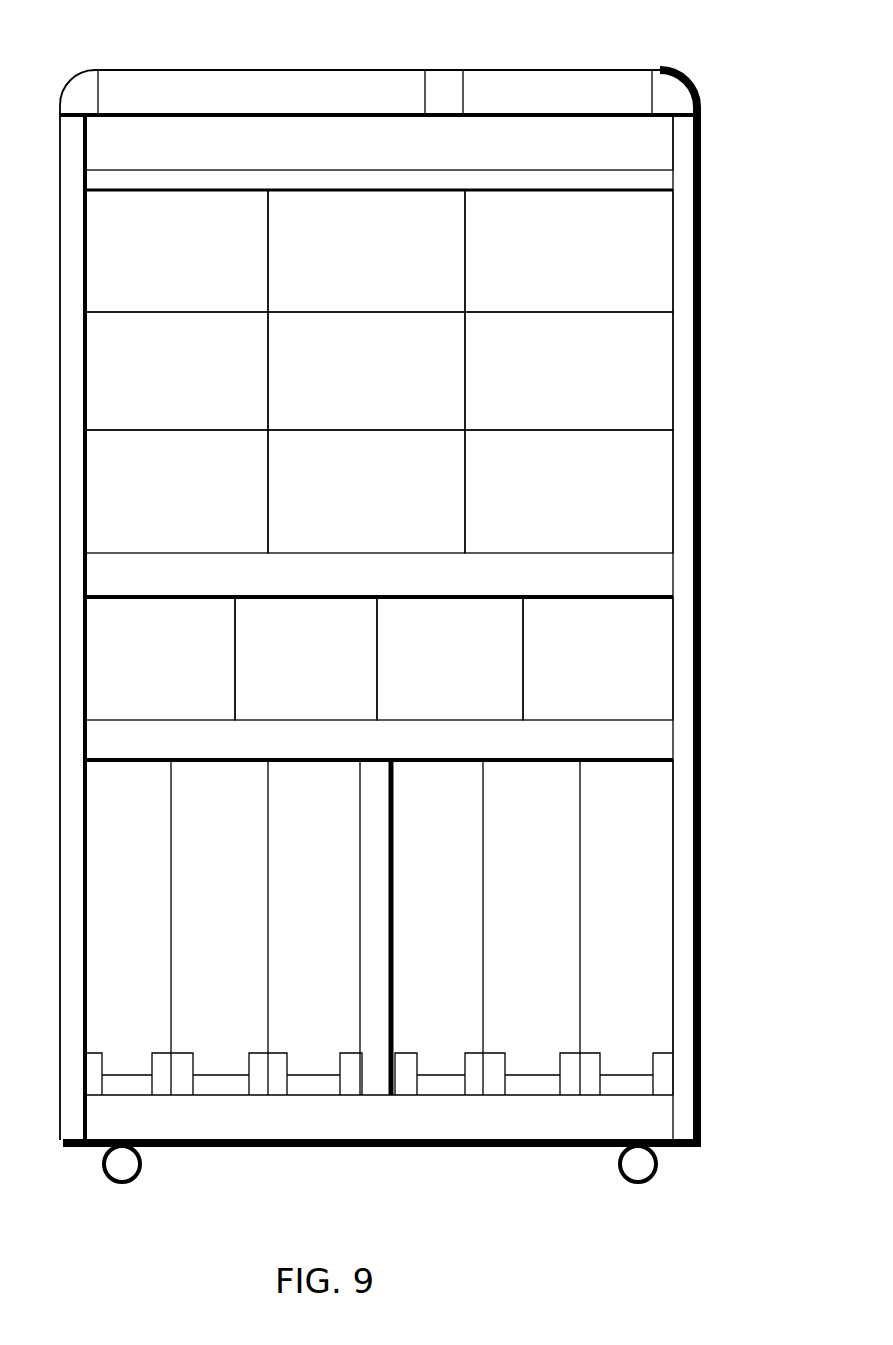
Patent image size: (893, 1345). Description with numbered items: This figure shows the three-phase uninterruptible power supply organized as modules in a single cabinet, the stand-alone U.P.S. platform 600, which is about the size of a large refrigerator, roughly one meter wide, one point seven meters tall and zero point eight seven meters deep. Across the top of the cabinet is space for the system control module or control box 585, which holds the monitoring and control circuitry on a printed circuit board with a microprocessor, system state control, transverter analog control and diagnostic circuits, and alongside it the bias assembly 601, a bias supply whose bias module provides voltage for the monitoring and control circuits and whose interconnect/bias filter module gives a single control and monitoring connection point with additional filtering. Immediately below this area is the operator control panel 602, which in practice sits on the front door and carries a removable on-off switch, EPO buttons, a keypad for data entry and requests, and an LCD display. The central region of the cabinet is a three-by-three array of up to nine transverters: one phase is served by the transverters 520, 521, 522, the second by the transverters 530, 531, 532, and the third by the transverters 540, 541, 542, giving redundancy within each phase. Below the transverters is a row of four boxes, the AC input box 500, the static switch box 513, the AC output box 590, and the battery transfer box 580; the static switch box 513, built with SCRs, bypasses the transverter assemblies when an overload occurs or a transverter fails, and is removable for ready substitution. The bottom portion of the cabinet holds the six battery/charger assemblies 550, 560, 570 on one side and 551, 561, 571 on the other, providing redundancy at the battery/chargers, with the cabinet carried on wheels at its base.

The U.P.S. platform 600 is at (462, 34).
The control box 585 is at (252, 108).
The bias assembly 601 is at (526, 108).
The operator control panel 602 is at (527, 157).
The transverter 522 is at (195, 263).
The transverter 532 is at (385, 263).
The transverter 542 is at (592, 263).
The transverter 521 is at (140, 390).
The transverter 531 is at (332, 390).
The transverter 541 is at (533, 390).
The transverter 520 is at (193, 495).
The transverter 530 is at (385, 495).
The transverter 540 is at (585, 495).
The AC input box 500 is at (128, 680).
The static switch box 513 is at (273, 680).
The AC output box 590 is at (477, 680).
The battery transfer box 580 is at (572, 680).
The battery/charger assembly 550 is at (90, 863).
The battery/charger assembly 560 is at (188, 863).
The battery/charger assembly 570 is at (282, 863).
The battery/charger assembly 551 is at (407, 863).
The battery/charger assembly 561 is at (552, 863).
The battery/charger assembly 571 is at (600, 863).